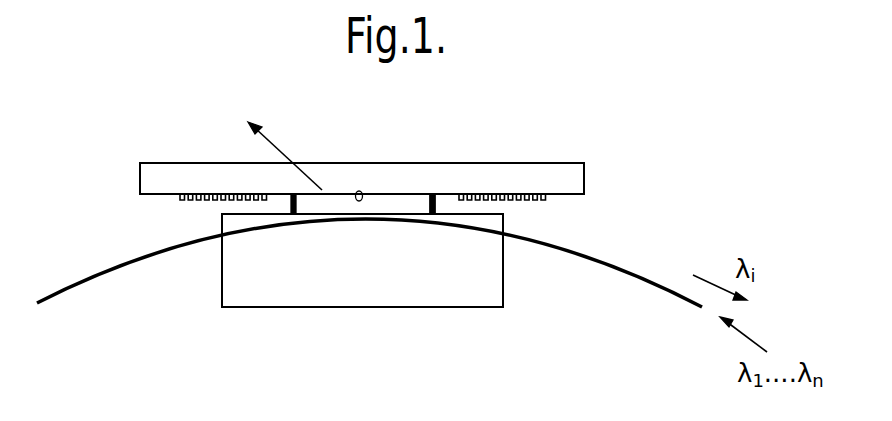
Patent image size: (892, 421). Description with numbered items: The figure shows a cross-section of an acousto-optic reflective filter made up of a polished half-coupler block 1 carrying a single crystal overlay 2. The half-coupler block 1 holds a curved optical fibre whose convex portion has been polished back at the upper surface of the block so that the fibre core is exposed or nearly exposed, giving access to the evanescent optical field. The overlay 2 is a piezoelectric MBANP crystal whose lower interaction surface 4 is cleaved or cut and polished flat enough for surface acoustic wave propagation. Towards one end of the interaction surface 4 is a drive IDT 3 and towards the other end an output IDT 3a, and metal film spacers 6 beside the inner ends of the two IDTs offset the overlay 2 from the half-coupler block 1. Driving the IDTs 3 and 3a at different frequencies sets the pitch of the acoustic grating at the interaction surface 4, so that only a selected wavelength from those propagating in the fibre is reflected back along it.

The half-coupler block 1 is at (515, 283).
The single crystal overlay 2 is at (598, 178).
The drive IDT 3 is at (178, 201).
The output IDT 3a is at (548, 201).
The interaction surface 4 is at (361, 192).
The metal film spacers 6 is at (436, 212).